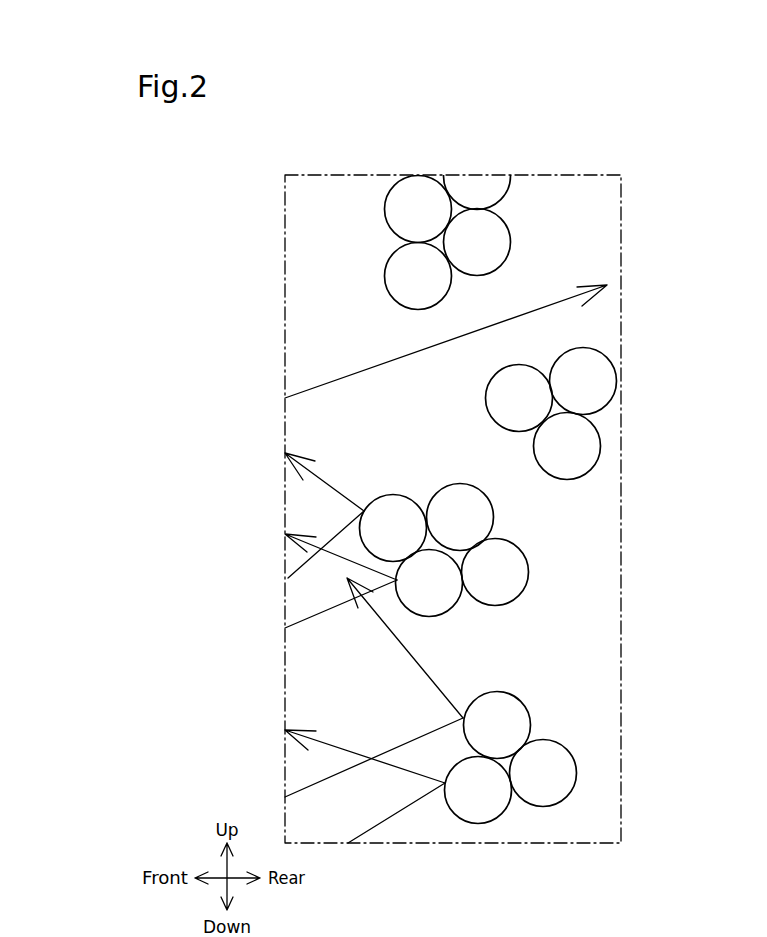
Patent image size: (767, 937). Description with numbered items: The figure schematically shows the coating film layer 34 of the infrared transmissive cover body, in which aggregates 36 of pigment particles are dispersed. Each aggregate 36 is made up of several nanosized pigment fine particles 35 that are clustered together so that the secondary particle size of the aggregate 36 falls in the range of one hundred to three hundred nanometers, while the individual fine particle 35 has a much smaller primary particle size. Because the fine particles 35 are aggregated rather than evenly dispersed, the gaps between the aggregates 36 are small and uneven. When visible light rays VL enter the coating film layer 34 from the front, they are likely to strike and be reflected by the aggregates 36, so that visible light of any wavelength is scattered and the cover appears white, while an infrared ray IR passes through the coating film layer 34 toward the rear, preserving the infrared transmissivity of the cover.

The coating film layer 34 is at (615, 212).
The fine particle 35 is at (398, 231).
The aggregate 36 is at (483, 495).
The infrared ray IR is at (400, 355).
The visible light ray VL is at (290, 580).